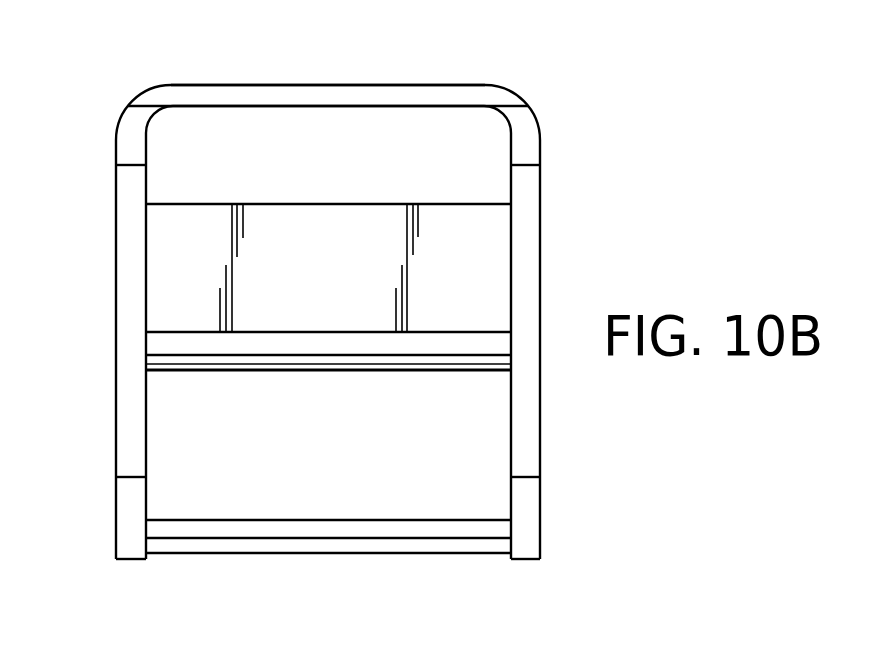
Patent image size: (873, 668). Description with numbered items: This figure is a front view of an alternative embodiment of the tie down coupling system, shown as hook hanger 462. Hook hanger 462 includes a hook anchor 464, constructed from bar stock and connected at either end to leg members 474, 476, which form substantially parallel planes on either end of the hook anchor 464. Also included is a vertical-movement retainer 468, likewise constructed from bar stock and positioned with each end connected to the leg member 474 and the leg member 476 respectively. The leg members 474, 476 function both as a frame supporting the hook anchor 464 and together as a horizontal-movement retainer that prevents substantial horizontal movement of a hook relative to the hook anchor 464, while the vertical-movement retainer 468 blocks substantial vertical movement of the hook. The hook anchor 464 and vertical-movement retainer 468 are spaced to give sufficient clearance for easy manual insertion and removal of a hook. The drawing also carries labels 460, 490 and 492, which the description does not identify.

The cabinet frame 460 is at (115, 318).
The hook hanger 462 is at (328, 84).
The hook anchor 464 is at (340, 372).
The vertical-movement retainer 468 is at (340, 555).
The leg member 474 is at (115, 232).
The leg member 476 is at (541, 238).
The upper compartment 490 is at (348, 165).
The lower compartment 492 is at (348, 465).